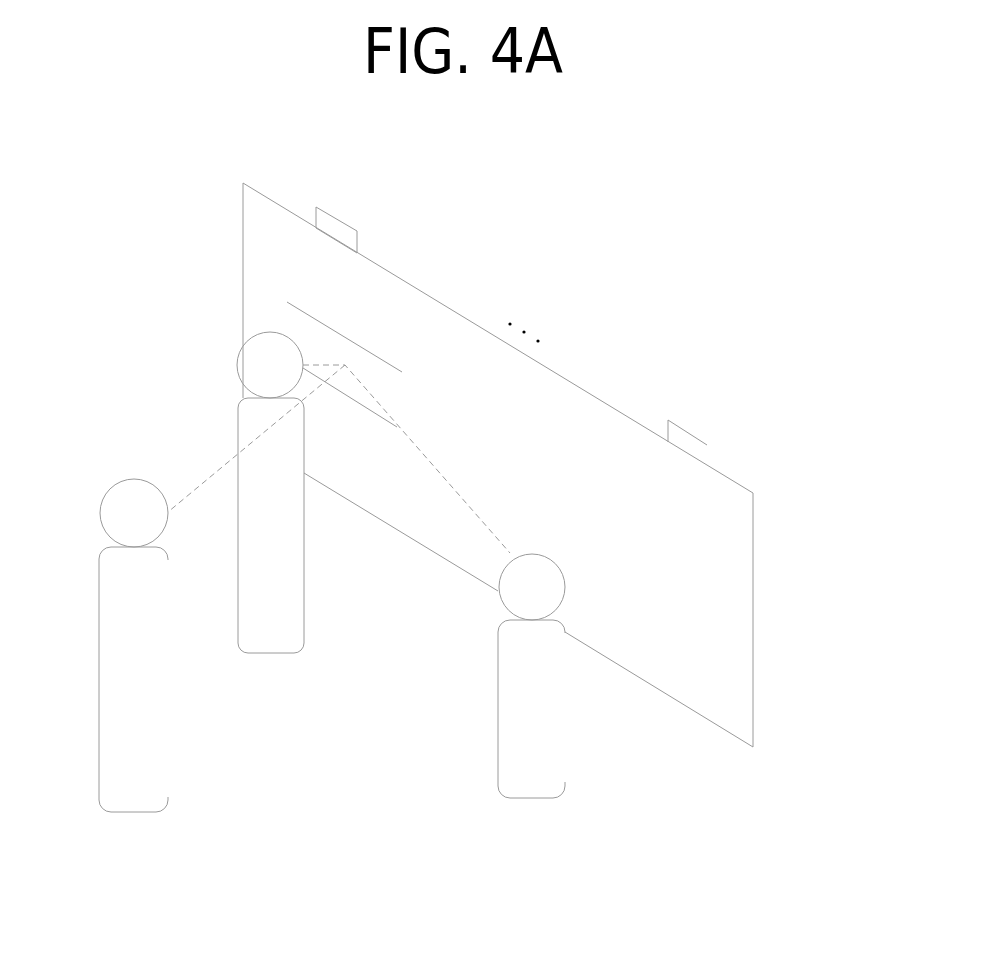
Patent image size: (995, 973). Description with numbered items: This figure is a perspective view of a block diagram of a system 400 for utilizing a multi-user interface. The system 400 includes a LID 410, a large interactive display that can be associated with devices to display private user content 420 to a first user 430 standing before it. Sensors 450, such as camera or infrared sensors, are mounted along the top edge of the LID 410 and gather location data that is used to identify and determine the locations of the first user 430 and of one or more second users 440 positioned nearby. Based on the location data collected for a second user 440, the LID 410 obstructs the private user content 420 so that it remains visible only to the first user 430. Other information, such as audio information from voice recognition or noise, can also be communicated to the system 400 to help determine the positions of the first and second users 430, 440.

The system 400 is at (640, 300).
The LID 410 is at (755, 527).
The private user content 420 is at (400, 402).
The first user 430 is at (304, 607).
The second user 440 is at (168, 668).
The sensors 450 is at (358, 241).